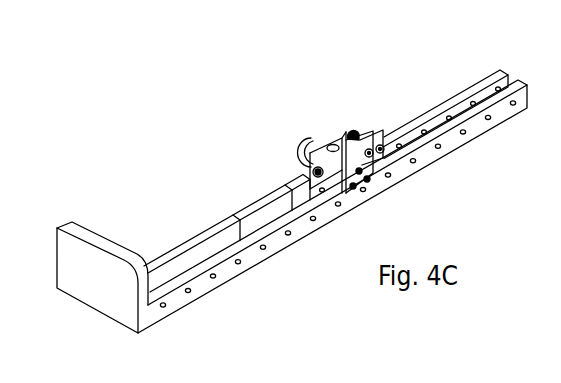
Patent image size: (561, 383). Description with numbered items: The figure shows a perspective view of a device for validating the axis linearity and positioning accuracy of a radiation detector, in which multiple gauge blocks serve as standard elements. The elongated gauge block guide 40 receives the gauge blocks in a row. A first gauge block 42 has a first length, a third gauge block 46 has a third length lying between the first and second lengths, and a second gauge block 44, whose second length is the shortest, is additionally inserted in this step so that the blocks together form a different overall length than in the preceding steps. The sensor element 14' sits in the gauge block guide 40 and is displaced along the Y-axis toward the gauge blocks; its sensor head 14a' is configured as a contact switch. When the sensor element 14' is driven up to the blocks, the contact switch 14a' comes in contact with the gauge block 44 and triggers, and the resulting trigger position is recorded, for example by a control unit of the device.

The gauge block guide 40 is at (410, 122).
The first gauge block 42 is at (177, 248).
The second gauge block 44 is at (293, 178).
The third gauge block 46 is at (258, 209).
The sensor element 14' is at (316, 120).
The sensor head 14a' is at (266, 135).